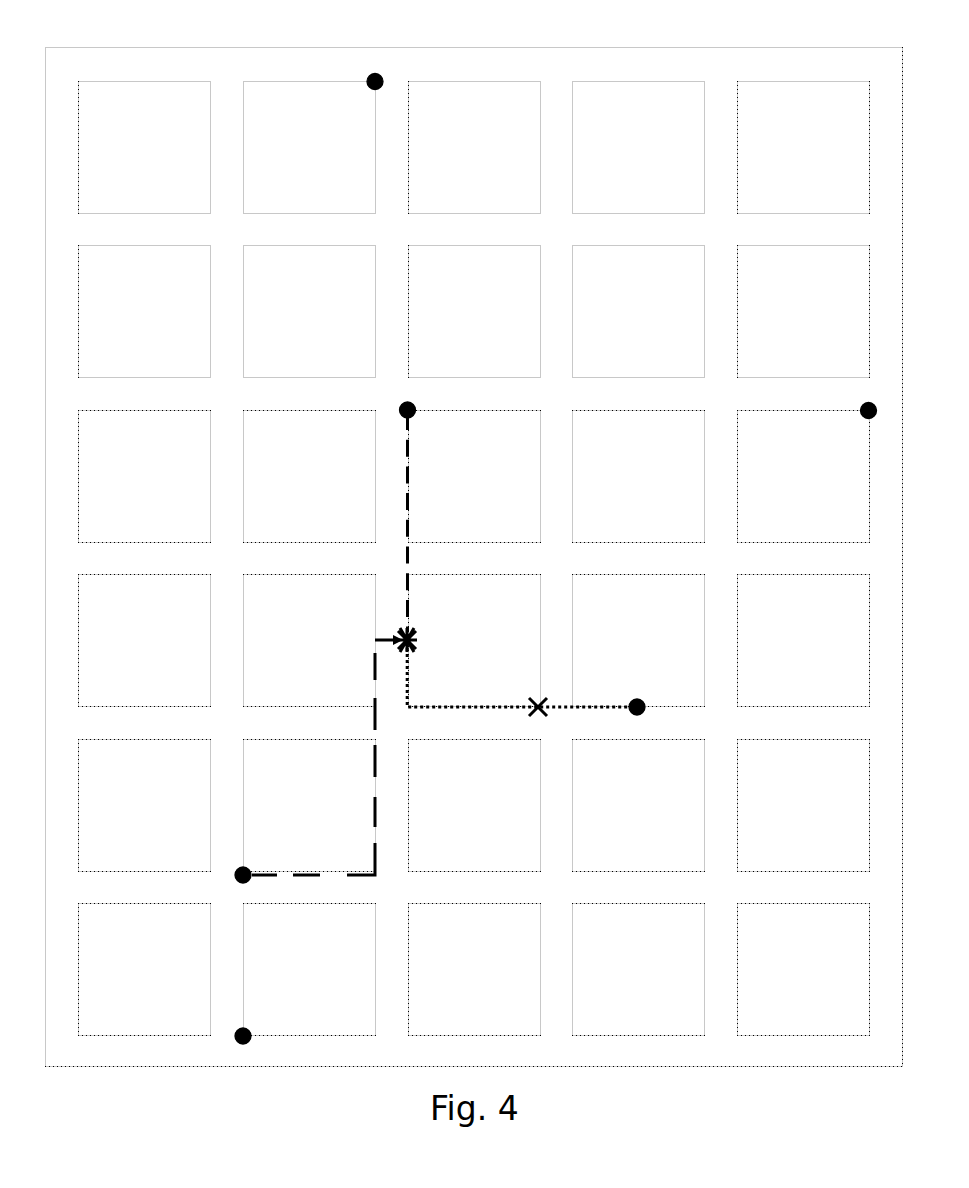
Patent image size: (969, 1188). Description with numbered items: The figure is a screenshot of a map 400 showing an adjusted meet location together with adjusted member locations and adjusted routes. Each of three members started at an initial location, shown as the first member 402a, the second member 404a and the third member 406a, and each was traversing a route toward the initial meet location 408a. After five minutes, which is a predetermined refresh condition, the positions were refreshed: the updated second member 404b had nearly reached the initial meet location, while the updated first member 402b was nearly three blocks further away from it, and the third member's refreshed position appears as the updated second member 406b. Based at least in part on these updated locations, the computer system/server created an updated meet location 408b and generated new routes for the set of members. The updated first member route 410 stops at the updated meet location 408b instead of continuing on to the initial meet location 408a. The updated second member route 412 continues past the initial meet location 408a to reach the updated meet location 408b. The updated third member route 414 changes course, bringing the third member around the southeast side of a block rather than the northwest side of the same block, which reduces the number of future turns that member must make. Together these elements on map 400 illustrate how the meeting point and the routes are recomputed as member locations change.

The map 400 is at (489, 36).
The first member 402a is at (356, 99).
The updated first member 402b is at (420, 419).
The second member 404a is at (856, 421).
The updated second member 404b is at (645, 693).
The third member 406a is at (252, 1019).
The updated second member 406b is at (252, 854).
The meet location 408a is at (530, 693).
The updated meet location 408b is at (425, 637).
The updated first member route 410 is at (398, 543).
The updated second member route 412 is at (490, 718).
The updated third member route 414 is at (368, 722).